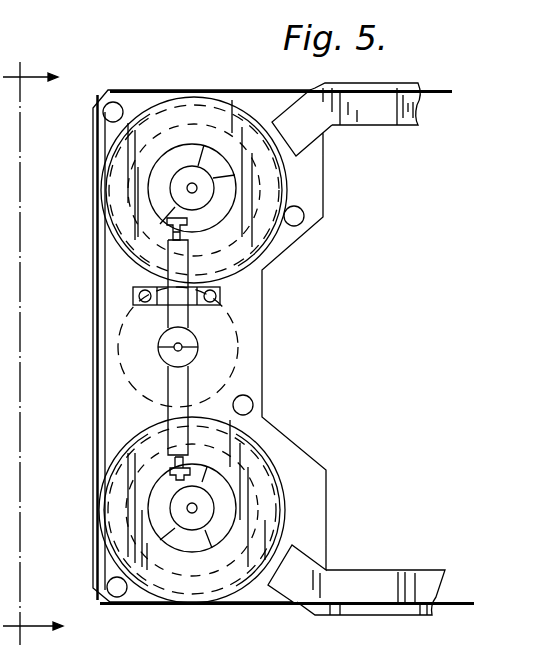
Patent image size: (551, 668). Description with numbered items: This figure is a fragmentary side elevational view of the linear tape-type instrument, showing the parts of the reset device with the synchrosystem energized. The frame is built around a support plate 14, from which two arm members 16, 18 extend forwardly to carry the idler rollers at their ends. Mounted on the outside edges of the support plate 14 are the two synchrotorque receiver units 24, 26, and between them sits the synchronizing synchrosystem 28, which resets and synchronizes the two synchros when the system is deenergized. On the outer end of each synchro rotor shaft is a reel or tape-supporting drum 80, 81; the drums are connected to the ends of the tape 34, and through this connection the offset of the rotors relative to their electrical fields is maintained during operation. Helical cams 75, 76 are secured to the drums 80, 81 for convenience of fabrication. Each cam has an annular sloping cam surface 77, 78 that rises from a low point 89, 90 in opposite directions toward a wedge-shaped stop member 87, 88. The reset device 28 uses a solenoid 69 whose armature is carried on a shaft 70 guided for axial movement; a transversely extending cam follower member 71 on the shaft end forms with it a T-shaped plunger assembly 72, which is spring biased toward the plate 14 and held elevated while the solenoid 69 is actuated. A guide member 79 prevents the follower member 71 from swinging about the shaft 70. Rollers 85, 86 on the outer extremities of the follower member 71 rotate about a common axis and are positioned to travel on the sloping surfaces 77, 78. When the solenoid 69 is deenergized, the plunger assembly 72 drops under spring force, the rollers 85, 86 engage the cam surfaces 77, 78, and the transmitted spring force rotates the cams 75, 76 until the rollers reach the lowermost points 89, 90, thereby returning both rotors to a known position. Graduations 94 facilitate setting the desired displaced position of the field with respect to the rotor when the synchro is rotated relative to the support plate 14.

The support plate 14 is at (325, 188).
The arm member 16 is at (397, 127).
The arm member 18 is at (417, 582).
The synchrotorque receiver unit 24 is at (130, 150).
The synchrotorque receiver unit 26 is at (110, 545).
The synchronizing synchrosystem 28 is at (44, 349).
The tape 34 is at (440, 89).
The graduations 94 is at (457, 602).
The solenoid 69 is at (120, 375).
The shaft 70 is at (163, 348).
The cam follower member 71 is at (185, 366).
The plunger assembly 72 is at (195, 348).
The helical cam 75 is at (232, 214).
The helical cam 76 is at (236, 528).
The sloping cam surface 77 is at (157, 180).
The sloping cam surface 78 is at (157, 500).
The guide member 79 is at (133, 294).
The reel 80 is at (183, 100).
The reel 81 is at (282, 511).
The roller 85 is at (186, 231).
The roller 86 is at (172, 470).
The wedge-shaped stop member 87 is at (213, 152).
The wedge-shaped stop member 88 is at (175, 537).
The low point 89 is at (164, 221).
The low point 90 is at (207, 477).